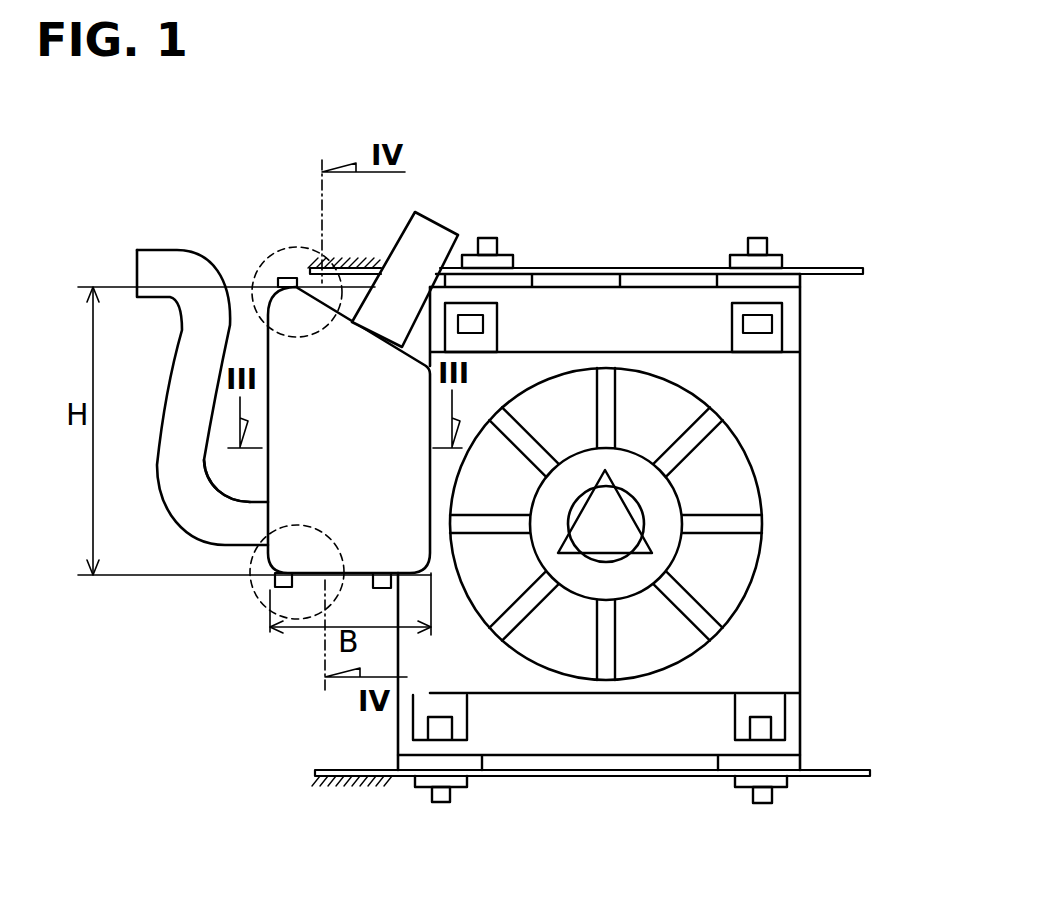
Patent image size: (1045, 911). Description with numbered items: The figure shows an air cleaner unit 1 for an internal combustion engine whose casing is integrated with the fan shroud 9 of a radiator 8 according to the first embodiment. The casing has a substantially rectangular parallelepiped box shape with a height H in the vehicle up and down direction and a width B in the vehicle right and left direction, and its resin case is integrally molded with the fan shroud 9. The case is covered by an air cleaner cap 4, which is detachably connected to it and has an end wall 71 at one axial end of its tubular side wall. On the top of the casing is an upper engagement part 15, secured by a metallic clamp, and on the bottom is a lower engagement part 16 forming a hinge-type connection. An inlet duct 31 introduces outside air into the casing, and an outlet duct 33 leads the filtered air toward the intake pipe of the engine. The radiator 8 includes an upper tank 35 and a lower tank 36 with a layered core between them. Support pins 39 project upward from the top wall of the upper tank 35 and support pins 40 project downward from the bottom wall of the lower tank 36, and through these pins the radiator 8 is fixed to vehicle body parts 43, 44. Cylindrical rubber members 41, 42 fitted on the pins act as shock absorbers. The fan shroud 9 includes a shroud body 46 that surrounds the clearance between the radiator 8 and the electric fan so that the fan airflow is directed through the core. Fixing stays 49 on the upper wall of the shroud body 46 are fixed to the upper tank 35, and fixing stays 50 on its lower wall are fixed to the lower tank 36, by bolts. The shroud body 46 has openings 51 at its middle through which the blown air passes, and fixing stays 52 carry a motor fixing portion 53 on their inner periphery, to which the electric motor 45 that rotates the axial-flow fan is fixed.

The air cleaner unit 1 is at (220, 209).
The air cleaner cap 4 is at (264, 467).
The radiator 8 is at (667, 502).
The fan shroud 9 is at (661, 522).
The shroud body 46 is at (788, 522).
The upper engagement part 15 is at (288, 277).
The lower engagement part 16 is at (290, 588).
The inlet duct 31 is at (157, 248).
The outlet duct 33 is at (414, 211).
The upper tank 35 is at (618, 300).
The lower tank 36 is at (608, 743).
The support pins 39 is at (488, 237).
The support pins 40 is at (442, 806).
The rubber member 41 is at (501, 253).
The rubber member 42 is at (415, 784).
The vehicle part 43 is at (823, 267).
The vehicle part 44 is at (838, 778).
The electric motor 45 is at (618, 527).
The fixing stays 49 is at (492, 325).
The fixing stays 50 is at (455, 707).
The openings 51 is at (668, 652).
The fixing stays 52 is at (717, 629).
The motor fixing portion 53 is at (665, 532).
The end wall 71 is at (388, 508).